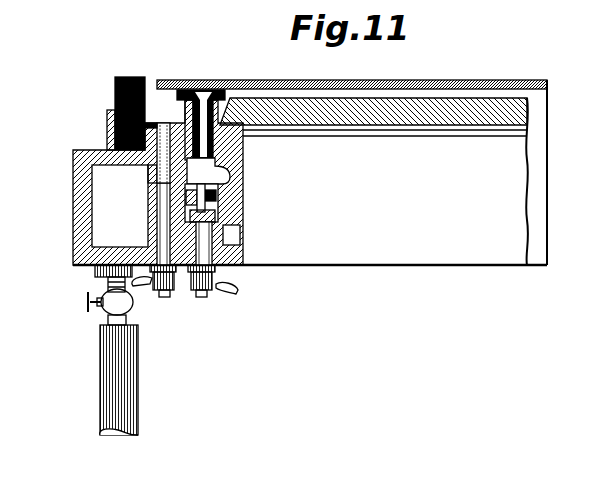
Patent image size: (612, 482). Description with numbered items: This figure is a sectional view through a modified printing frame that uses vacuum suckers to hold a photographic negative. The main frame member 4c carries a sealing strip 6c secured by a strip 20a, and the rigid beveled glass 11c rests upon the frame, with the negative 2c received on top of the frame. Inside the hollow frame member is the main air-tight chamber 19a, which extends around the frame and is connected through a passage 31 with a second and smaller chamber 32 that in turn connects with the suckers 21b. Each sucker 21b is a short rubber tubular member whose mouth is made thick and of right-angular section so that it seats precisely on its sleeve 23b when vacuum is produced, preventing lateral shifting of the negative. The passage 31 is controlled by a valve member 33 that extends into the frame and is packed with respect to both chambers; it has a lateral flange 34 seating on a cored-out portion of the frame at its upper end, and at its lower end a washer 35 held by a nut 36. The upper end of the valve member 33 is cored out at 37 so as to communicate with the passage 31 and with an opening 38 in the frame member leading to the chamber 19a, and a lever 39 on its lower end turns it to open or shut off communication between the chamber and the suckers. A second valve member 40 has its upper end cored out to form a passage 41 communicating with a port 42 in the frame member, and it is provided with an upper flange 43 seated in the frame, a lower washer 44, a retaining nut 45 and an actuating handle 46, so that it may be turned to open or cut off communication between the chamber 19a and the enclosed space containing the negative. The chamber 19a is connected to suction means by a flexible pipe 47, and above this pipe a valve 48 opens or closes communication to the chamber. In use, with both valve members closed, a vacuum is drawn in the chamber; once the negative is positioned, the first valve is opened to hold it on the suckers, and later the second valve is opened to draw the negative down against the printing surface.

The negative 2c is at (443, 84).
The glass 11c is at (438, 124).
The main frame member 4c is at (73, 186).
The sealing strip 6c is at (118, 92).
The strip 20a is at (86, 127).
The chamber 19a is at (95, 205).
The sucker 21b is at (205, 112).
The sleeve 23b is at (185, 113).
The passage 31 is at (208, 171).
The second chamber 32 is at (228, 170).
The valve member 33 is at (208, 205).
The lateral flange 34 is at (215, 186).
The washer 35 is at (216, 196).
The nut 36 is at (215, 292).
The cored out portion 37 is at (210, 215).
The opening 38 is at (190, 270).
The lever 39 is at (238, 290).
The second valve member 40 is at (160, 218).
The passage 41 is at (163, 123).
The port 42 is at (126, 200).
The upper flange 43 is at (148, 172).
The lower washer 44 is at (156, 128).
The retaining nut 45 is at (168, 296).
The actuating handle 46 is at (135, 290).
The flexible pipe 47 is at (104, 376).
The valve 48 is at (115, 302).